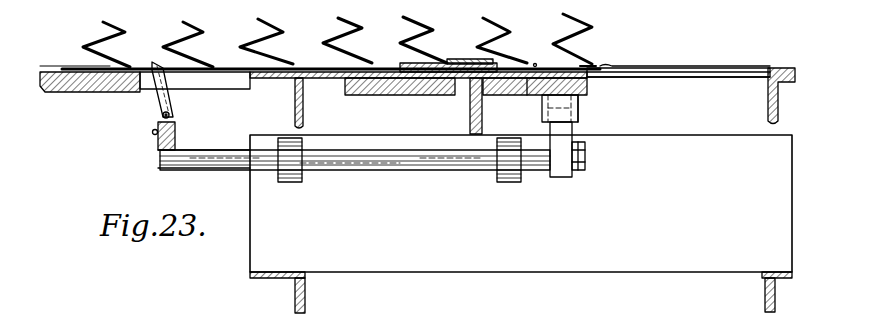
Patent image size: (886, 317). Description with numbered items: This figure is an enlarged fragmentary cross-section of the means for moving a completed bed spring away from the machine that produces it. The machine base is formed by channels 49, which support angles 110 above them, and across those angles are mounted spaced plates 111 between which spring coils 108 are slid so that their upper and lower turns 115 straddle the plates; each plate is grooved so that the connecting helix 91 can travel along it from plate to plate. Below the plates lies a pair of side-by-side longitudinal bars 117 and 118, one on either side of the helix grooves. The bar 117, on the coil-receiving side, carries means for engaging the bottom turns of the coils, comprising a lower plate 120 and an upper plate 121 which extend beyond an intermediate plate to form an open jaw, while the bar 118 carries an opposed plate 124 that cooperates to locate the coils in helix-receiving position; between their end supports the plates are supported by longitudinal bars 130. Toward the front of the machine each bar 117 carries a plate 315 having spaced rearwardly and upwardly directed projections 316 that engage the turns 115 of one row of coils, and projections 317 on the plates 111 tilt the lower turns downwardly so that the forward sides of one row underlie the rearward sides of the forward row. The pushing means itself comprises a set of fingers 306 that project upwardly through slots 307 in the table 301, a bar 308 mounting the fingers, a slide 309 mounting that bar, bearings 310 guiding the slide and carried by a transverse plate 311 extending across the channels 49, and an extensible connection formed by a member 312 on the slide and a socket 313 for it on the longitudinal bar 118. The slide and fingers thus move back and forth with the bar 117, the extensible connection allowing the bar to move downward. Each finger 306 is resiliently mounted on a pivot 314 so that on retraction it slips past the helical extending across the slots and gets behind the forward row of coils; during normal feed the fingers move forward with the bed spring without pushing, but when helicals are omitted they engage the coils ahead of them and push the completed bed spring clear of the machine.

The coils 108 is at (121, 28).
The helix 91 is at (222, 66).
The table 301 is at (53, 92).
The fingers 306 is at (164, 80).
The slots 307 is at (230, 86).
The plates 111 is at (318, 78).
The angles 110 is at (302, 125).
The longitudinal bar 118 is at (368, 88).
The plate 124 is at (405, 63).
The upper plate 121 is at (470, 59).
The longitudinal bars 130 is at (470, 128).
The longitudinal bar 117 is at (494, 88).
The projections 316 is at (536, 64).
The projections 317 is at (588, 63).
The turns 115 is at (608, 64).
The plate 315 is at (613, 77).
The lower plate 120 is at (536, 96).
The socket 313 is at (578, 106).
The member 312 is at (562, 127).
The pivot 314 is at (160, 114).
The bar 308 is at (158, 143).
The slide 309 is at (376, 164).
The bearings 310 is at (291, 182).
The transverse plate 311 is at (553, 262).
The channels 49 is at (305, 293).